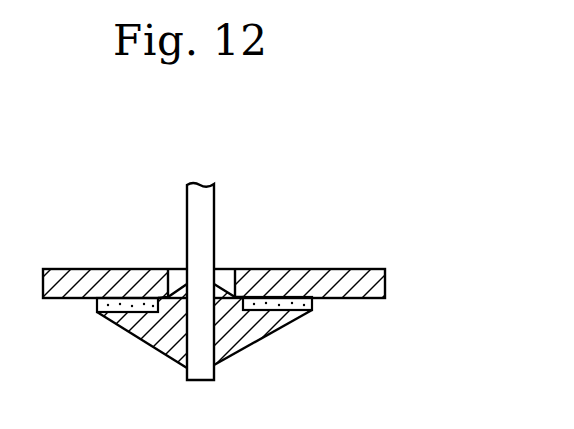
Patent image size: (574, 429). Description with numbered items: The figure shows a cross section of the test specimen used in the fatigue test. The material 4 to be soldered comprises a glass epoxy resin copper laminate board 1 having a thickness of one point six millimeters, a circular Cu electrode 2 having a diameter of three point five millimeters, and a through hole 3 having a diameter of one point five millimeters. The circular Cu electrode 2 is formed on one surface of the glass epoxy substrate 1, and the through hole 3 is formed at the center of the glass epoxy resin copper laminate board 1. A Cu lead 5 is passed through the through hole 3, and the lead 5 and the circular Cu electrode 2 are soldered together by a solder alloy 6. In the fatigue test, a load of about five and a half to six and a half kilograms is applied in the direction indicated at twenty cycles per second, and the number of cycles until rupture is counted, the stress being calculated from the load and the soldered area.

The glass epoxy resin copper laminate board 1 is at (373, 272).
The circular Cu electrode 2 is at (312, 300).
The through hole 3 is at (234, 279).
The material to be soldered 4 is at (260, 290).
The Cu lead 5 is at (206, 206).
The solder alloy 6 is at (247, 329).